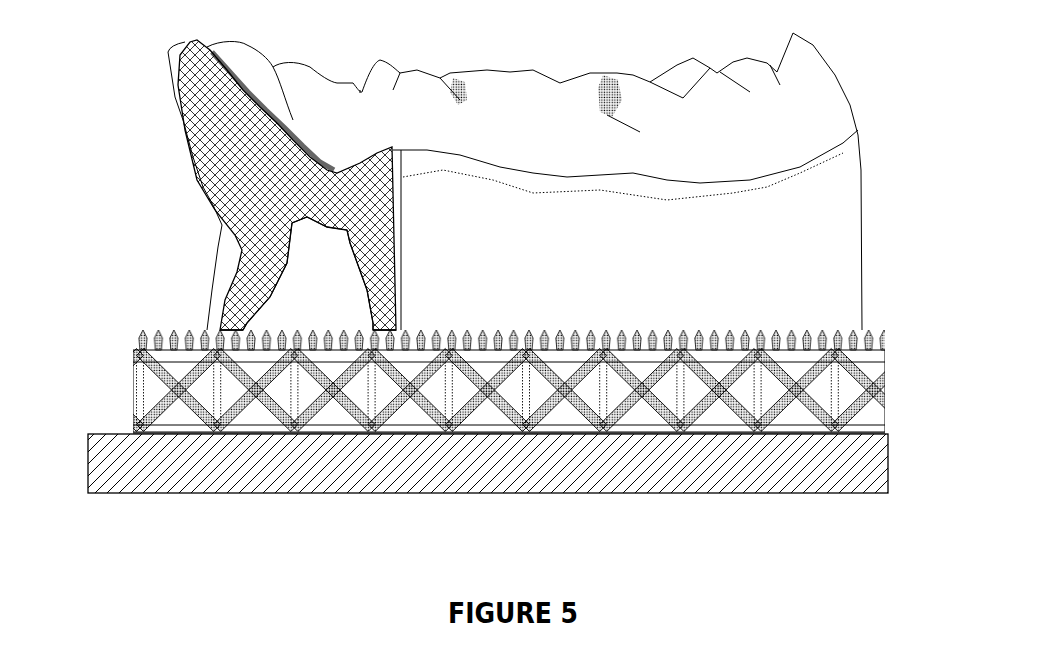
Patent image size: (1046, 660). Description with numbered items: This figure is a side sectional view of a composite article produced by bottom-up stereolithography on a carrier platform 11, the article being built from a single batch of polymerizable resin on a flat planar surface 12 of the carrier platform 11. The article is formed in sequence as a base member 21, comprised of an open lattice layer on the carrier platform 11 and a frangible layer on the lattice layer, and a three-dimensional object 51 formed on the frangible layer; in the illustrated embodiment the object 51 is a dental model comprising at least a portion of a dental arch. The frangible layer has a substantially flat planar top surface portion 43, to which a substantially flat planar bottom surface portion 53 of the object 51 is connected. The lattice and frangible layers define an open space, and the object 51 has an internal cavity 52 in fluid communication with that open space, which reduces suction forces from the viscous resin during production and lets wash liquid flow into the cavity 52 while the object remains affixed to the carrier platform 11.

The carrier platform 11 is at (133, 462).
The flat planar surface 12 is at (120, 430).
The base member 21 is at (887, 331).
The top surface portion 43 is at (599, 326).
The three-dimensional object 51 is at (515, 181).
The internal cavity 52 is at (308, 273).
The bottom surface portion 53 is at (392, 339).